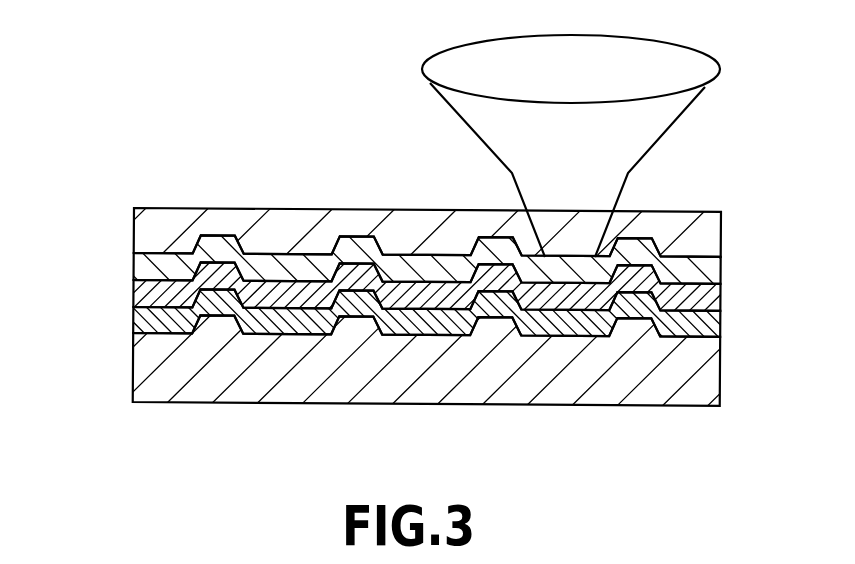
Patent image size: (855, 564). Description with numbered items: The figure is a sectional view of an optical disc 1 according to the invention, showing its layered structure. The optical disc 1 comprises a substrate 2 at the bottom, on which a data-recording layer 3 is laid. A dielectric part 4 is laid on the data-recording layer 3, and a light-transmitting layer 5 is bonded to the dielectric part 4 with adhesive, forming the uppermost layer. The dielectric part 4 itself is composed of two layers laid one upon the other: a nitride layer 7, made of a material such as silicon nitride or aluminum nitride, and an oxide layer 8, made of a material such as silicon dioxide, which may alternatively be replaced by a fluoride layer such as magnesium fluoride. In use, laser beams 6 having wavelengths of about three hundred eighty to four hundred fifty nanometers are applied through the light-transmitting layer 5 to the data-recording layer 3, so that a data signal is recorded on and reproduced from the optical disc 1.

The optical disc 1 is at (327, 80).
The substrate 2 is at (150, 374).
The data-recording layer 3 is at (150, 319).
The dielectric part 4 is at (404, 275).
The light-transmitting layer 5 is at (150, 229).
The laser beams 6 is at (657, 140).
The nitride layer 7 is at (145, 293).
The oxide layer 8 is at (145, 263).